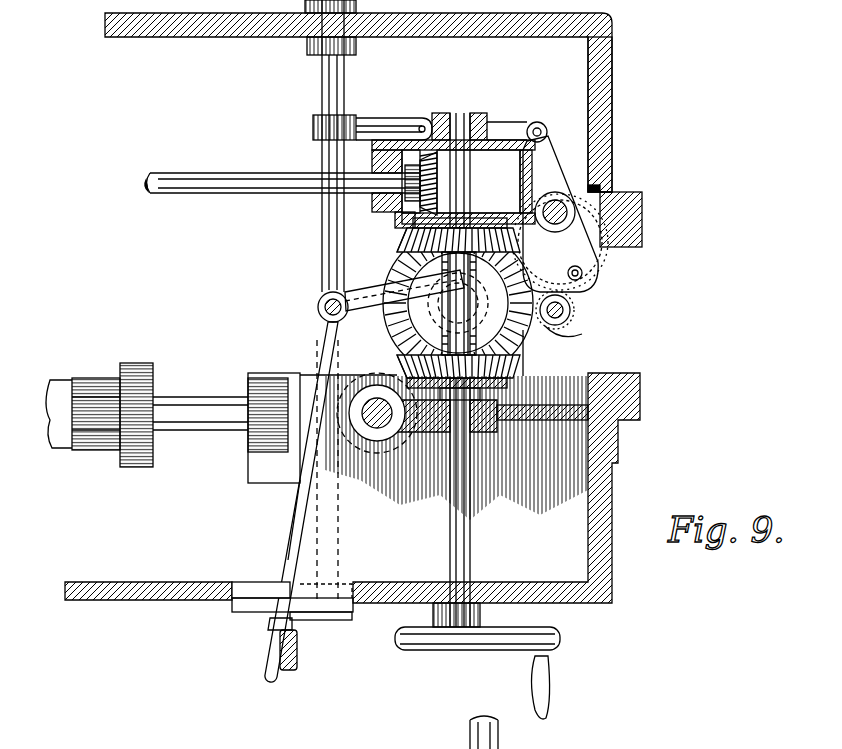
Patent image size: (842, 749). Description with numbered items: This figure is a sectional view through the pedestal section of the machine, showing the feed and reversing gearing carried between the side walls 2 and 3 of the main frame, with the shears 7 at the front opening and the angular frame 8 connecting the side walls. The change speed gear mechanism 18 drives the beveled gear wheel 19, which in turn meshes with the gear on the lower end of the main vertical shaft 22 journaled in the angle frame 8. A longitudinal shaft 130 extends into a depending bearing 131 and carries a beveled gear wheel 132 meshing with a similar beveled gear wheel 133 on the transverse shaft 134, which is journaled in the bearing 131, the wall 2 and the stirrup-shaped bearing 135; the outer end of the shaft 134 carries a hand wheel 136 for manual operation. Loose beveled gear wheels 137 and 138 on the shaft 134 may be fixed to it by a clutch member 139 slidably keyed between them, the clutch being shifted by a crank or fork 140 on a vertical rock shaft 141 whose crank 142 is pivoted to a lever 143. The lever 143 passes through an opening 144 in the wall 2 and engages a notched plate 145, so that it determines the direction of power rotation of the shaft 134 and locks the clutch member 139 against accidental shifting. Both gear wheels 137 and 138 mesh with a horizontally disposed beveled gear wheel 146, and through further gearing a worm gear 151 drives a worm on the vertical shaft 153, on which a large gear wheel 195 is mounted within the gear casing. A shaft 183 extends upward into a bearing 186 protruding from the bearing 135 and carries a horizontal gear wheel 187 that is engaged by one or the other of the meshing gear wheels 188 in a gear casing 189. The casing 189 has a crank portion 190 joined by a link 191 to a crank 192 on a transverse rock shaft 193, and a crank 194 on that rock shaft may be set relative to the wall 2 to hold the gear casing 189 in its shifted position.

The side wall 2 is at (113, 584).
The side wall 3 is at (219, 37).
The shears 7 is at (614, 408).
The angular frame 8 is at (444, 466).
The change speed gear mechanism 18 is at (125, 368).
The beveled gear wheel 19 is at (292, 481).
The vertical shaft 22 is at (376, 428).
The shaft 130 is at (190, 178).
The bearing 131 is at (441, 114).
The beveled gear wheel 132 is at (425, 160).
The beveled gear wheel 133 is at (479, 206).
The transverse shaft 134 is at (466, 118).
The bearing 135 is at (562, 407).
The hand wheel 136 is at (474, 650).
The beveled gear wheel 137 is at (412, 240).
The beveled gear wheel 138 is at (405, 358).
The clutch member 139 is at (476, 313).
The crank or fork 140 is at (352, 292).
The rock shaft 141 is at (318, 306).
The crank 142 is at (324, 345).
The lever 143 is at (292, 548).
The opening 144 is at (231, 596).
The notched plate 145 is at (262, 606).
The beveled gear wheel 146 is at (520, 330).
The worm gear 151 is at (400, 222).
The vertical shaft 153 is at (560, 218).
The shaft 183 is at (567, 320).
The bearing 186 is at (568, 332).
The gear wheel 187 is at (574, 310).
The meshing gear wheels 188 is at (595, 270).
The gear casing 189 is at (605, 240).
The crank portion 190 is at (556, 150).
The link 191 is at (532, 124).
The crank 192 is at (340, 128).
The rock shaft 193 is at (322, 75).
The crank 194 is at (298, 668).
The large gear wheel 195 is at (614, 165).